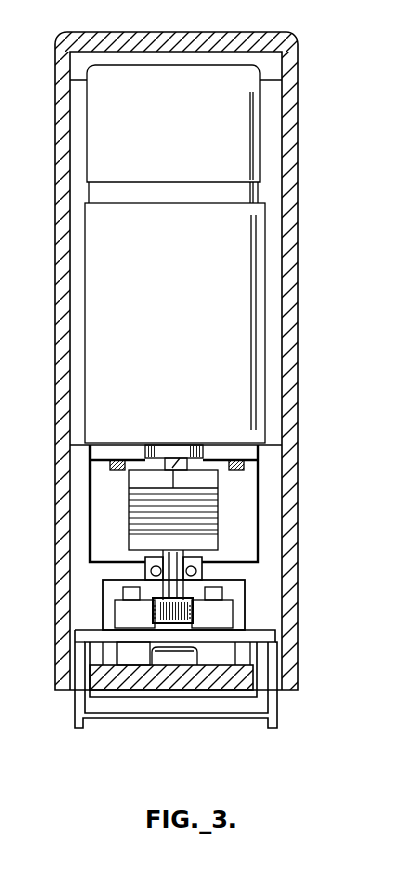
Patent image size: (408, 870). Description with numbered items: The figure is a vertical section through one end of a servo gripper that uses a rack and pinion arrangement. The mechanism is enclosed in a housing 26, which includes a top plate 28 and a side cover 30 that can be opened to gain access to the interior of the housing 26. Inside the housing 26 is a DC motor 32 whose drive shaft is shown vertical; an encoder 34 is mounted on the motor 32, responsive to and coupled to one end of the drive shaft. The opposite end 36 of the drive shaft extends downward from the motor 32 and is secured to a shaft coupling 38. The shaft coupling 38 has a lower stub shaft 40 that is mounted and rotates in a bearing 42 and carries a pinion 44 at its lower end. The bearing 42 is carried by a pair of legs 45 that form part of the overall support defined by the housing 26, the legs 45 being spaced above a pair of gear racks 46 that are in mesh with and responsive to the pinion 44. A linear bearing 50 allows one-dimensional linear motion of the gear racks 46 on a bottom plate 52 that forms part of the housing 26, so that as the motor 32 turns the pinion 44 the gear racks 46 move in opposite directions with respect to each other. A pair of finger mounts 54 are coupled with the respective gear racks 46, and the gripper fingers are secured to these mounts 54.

The housing 26 is at (300, 413).
The top plate 28 is at (228, 36).
The side cover 30 is at (57, 512).
The DC motor 32 is at (248, 272).
The encoder 34 is at (254, 136).
The opposite end of the drive shaft 36 is at (182, 455).
The shaft coupling 38 is at (220, 510).
The lower stub shaft 40 is at (177, 570).
The bearing 42 is at (148, 548).
The pinion 44 is at (195, 660).
The legs 45 is at (120, 567).
The gear racks 46 is at (118, 618).
The linear bearing 50 is at (134, 657).
The bottom plate 52 is at (238, 680).
The finger mounts 54 is at (178, 718).